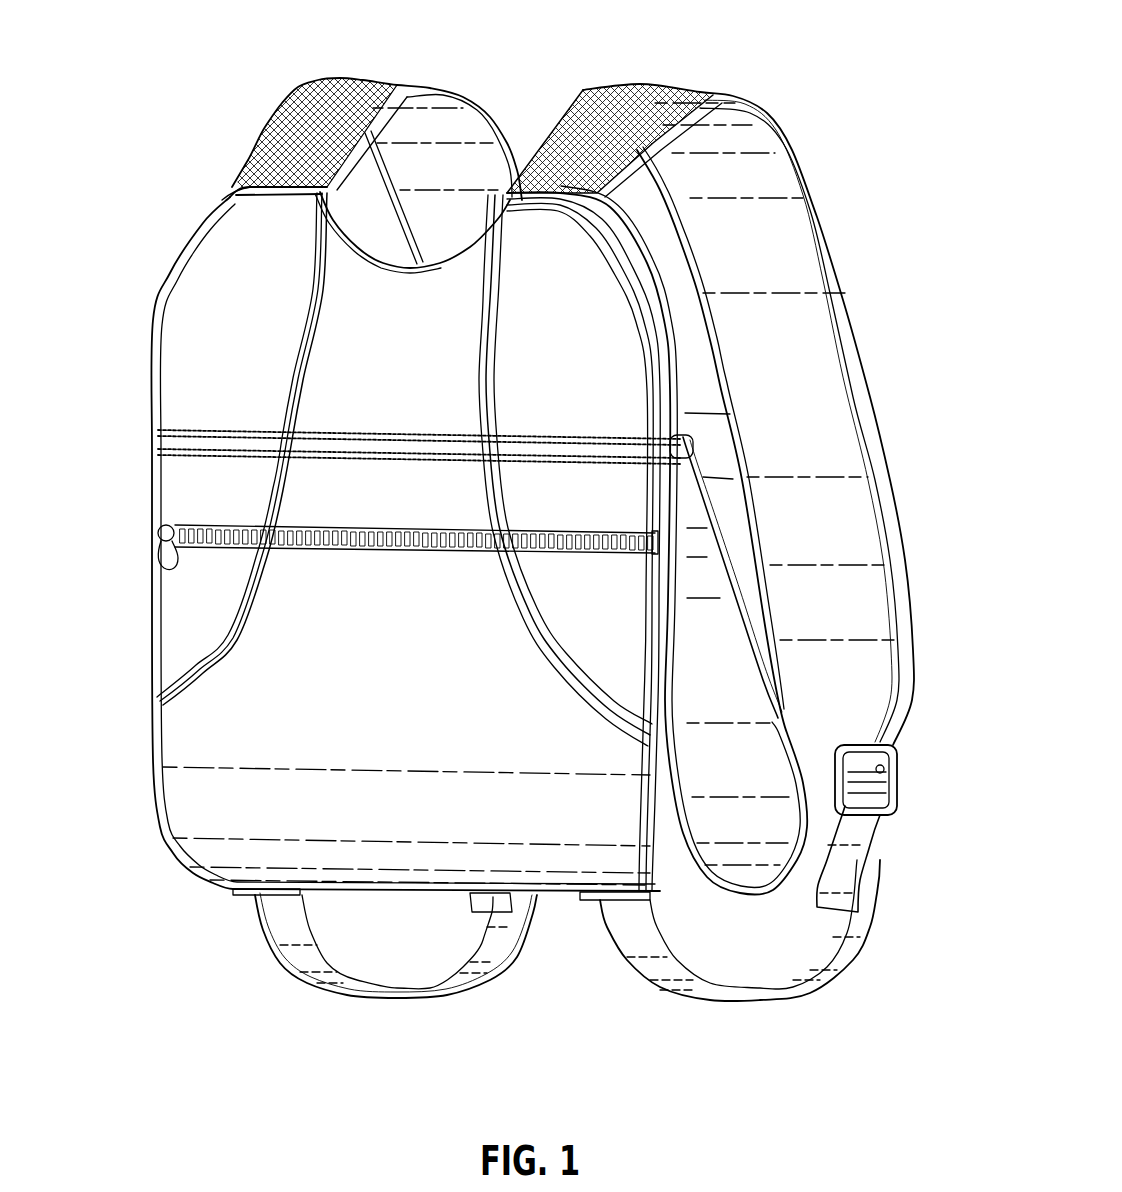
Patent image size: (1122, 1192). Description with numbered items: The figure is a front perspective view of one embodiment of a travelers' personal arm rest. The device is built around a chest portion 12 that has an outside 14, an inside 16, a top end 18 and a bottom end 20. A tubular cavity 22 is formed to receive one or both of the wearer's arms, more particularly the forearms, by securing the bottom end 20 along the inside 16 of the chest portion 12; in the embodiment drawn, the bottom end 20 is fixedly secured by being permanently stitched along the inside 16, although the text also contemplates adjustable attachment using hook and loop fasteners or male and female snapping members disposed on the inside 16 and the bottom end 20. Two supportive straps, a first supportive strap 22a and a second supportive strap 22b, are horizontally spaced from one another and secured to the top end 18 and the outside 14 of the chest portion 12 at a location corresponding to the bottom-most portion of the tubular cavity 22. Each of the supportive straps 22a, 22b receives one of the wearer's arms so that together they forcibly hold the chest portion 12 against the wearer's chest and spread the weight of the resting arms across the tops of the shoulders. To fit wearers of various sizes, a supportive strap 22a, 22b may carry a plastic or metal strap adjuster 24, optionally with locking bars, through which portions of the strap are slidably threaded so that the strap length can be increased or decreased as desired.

The chest portion 12 is at (126, 318).
The outside 14 is at (240, 350).
The inside 16 is at (730, 775).
The top end 18 is at (222, 198).
The bottom end 20 is at (693, 447).
The tubular cavity 22 is at (603, 500).
The first supportive strap 22a is at (446, 135).
The second supportive strap 22b is at (713, 145).
The strap adjuster 24 is at (895, 783).